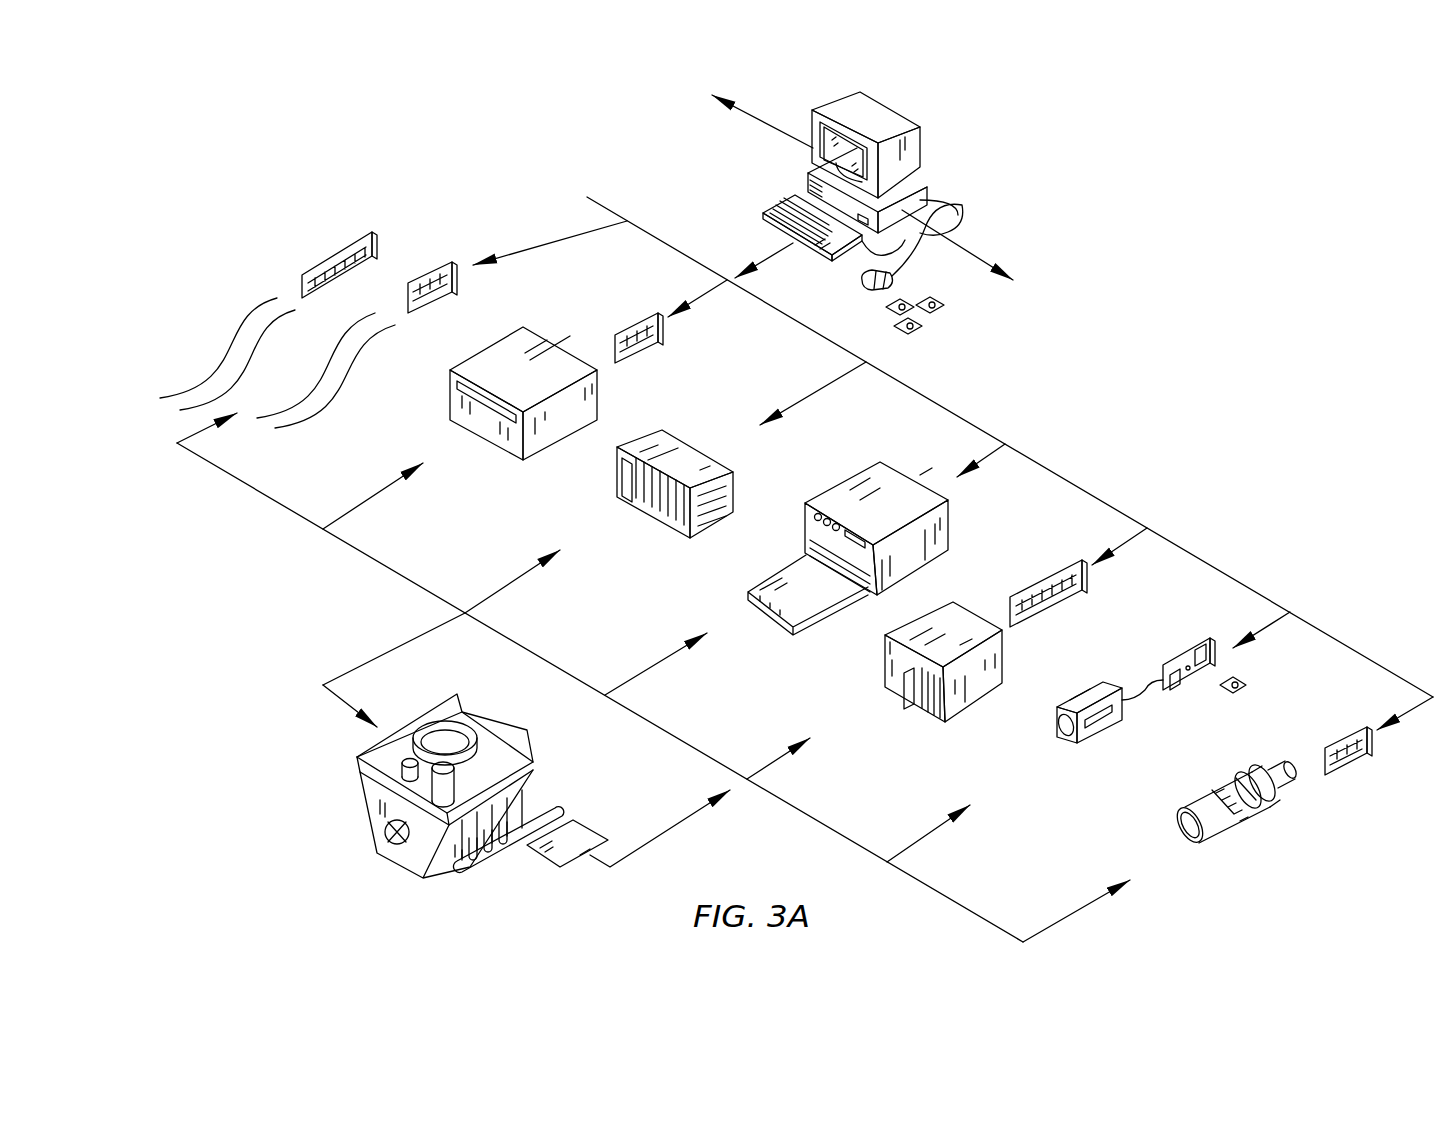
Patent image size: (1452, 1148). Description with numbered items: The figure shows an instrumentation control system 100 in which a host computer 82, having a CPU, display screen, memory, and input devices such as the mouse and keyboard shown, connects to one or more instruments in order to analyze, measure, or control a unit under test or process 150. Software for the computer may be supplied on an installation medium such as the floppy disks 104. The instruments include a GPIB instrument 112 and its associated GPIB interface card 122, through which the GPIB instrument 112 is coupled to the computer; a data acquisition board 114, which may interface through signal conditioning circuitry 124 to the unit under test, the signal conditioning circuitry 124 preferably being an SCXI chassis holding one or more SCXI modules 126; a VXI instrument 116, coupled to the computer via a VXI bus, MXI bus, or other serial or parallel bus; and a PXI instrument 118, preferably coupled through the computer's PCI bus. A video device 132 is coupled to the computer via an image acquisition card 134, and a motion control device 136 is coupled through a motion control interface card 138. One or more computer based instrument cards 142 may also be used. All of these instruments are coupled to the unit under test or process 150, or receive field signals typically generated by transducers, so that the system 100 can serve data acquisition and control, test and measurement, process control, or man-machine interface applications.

The computer 82 is at (885, 106).
The instrumentation control system 100 is at (1172, 236).
The floppy disks 104 is at (915, 330).
The GPIB instrument 112 is at (487, 358).
The data acquisition board 114 is at (1070, 558).
The VXI instrument 116 is at (847, 497).
The PXI instrument 118 is at (683, 453).
The GPIB interface card 122 is at (627, 327).
The signal conditioning circuitry 124 is at (897, 670).
The SCXI modules 126 is at (912, 693).
The video device 132 is at (1092, 732).
The image acquisition card 134 is at (1180, 653).
The motion control device 136 is at (1230, 827).
The motion control interface card 138 is at (1350, 763).
The computer based instrument cards 142 is at (317, 260).
The unit under test 150 is at (370, 800).